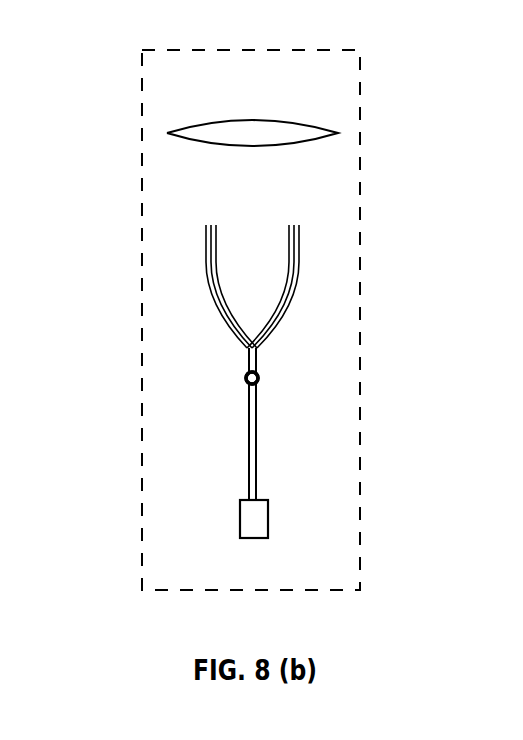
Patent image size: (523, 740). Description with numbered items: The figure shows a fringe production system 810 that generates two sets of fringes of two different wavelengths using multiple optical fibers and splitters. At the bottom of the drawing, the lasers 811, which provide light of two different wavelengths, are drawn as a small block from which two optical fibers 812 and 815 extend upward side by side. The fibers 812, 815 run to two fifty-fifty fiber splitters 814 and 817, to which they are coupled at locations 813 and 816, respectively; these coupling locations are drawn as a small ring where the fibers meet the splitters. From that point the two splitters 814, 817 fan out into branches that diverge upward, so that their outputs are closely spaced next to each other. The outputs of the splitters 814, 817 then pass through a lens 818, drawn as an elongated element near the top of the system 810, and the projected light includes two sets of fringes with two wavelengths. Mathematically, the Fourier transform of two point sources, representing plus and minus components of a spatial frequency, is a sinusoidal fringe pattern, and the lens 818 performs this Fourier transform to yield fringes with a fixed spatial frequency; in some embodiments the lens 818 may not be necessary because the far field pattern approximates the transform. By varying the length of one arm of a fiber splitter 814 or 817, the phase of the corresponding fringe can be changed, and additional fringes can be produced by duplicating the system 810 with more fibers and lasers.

The system 810 is at (140, 48).
The lasers 811 is at (240, 513).
The optical fiber 812 is at (249, 455).
The location 813 is at (243, 372).
The fiber splitter 814 is at (220, 285).
The optical fiber 815 is at (256, 455).
The location 816 is at (263, 382).
The fiber splitter 817 is at (293, 285).
The lens 818 is at (338, 133).